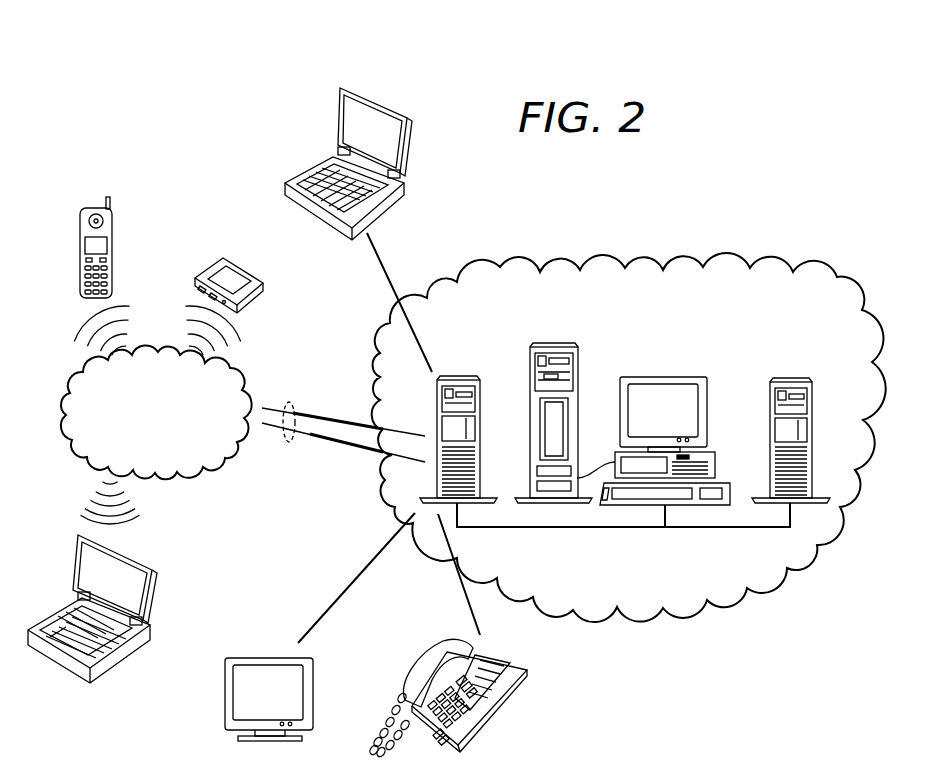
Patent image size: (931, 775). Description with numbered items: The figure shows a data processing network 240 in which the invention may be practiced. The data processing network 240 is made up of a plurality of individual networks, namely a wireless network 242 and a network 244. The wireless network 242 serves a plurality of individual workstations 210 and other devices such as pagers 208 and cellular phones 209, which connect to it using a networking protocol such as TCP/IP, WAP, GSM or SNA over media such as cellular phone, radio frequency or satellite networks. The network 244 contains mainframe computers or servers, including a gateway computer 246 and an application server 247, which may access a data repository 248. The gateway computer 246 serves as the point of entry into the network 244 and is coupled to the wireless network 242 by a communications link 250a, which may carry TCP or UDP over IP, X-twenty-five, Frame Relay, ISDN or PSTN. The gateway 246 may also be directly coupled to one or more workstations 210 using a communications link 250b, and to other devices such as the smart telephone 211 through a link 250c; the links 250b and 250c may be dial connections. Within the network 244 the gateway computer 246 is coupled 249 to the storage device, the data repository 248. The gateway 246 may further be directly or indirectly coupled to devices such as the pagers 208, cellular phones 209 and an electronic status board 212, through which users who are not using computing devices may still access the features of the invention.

The pager 208 is at (212, 268).
The cellular phone 209 is at (100, 216).
The workstation 210 is at (337, 113).
The smart telephone 211 is at (525, 673).
The electronic status board 212 is at (268, 658).
The data processing network 240 is at (735, 198).
The wireless network 242 is at (260, 362).
The network 244 is at (645, 256).
The gateway computer 246 is at (470, 381).
The application server 247 is at (663, 377).
The data repository 248 is at (790, 382).
The coupling 249 is at (623, 529).
The communications link 250a is at (288, 445).
The communications link 250b is at (414, 273).
The link 250c is at (473, 615).